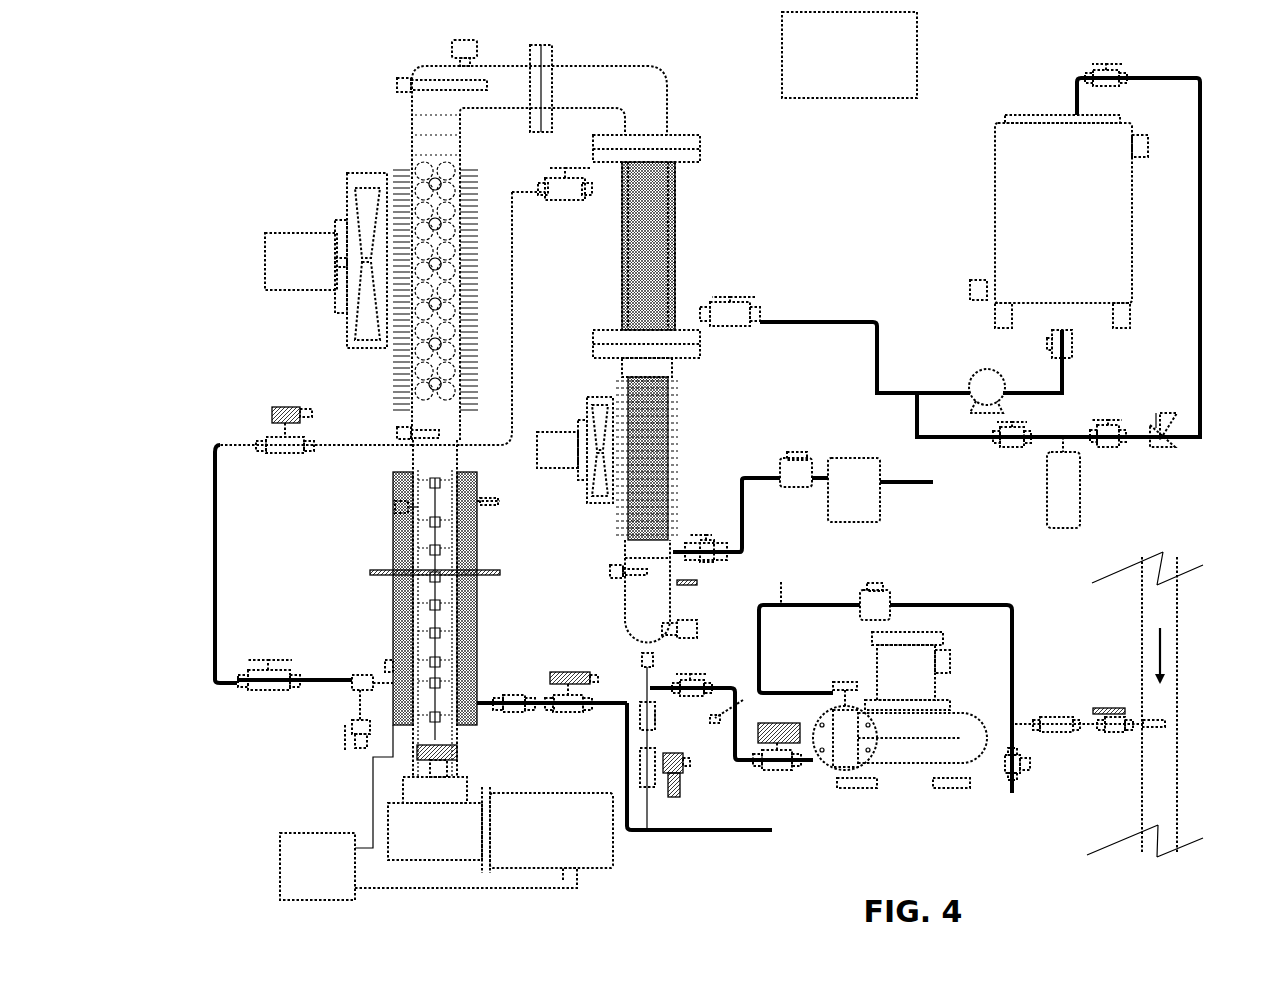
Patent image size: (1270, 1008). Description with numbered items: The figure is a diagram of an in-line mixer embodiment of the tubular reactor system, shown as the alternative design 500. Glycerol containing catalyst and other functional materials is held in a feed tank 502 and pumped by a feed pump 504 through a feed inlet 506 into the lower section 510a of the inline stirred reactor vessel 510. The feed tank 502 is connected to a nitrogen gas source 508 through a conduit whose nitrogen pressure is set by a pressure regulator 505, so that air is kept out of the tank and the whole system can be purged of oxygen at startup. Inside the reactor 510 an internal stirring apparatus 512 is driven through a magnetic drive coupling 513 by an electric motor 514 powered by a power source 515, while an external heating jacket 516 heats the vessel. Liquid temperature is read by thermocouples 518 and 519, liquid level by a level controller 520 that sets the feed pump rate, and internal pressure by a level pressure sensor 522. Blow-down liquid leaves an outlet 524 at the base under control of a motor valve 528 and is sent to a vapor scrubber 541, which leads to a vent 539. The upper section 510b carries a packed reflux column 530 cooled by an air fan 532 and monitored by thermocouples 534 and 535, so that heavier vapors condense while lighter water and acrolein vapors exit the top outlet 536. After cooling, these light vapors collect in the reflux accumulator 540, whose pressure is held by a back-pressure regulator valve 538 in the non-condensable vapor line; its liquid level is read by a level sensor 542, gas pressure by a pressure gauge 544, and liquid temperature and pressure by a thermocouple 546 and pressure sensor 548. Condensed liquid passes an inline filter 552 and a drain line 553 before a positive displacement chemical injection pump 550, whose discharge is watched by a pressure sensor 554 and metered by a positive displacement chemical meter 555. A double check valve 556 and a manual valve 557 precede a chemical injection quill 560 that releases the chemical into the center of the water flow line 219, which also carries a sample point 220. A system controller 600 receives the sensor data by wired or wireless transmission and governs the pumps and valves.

The design 500 is at (222, 128).
The inline stirred reactor vessel 510 is at (290, 341).
The lower section 510a is at (458, 538).
The upper section 510b is at (458, 400).
The internal stirring apparatus 512 is at (445, 604).
The magnetic drive coupling 513 is at (466, 756).
The electric motor 514 is at (547, 830).
The power source 515 is at (428, 812).
The external heating jacket 516 is at (395, 551).
The thermocouple 518 is at (392, 505).
The thermocouple 519 is at (387, 663).
The level controller 520 is at (400, 459).
The level pressure sensor 522 is at (493, 500).
The outlet 524 is at (500, 690).
The motor valve 528 is at (562, 672).
The reflux column 530 is at (440, 211).
The air fan 532 is at (278, 232).
The thermocouple 534 is at (402, 73).
The thermocouple 535 is at (392, 432).
The top outlet 536 is at (405, 141).
The back-pressure regulator valve 538 is at (801, 452).
The vent 539 is at (905, 488).
The reflux accumulator 540 is at (647, 685).
The vapor scrubber 541 is at (753, 649).
The level sensor 542 is at (612, 560).
The pressure gauge 544 is at (446, 43).
The thermocouple 546 is at (696, 631).
The pressure sensor 548 is at (688, 586).
The chemical injection pump 550 is at (900, 710).
The inline filter 552 is at (742, 706).
The drain line 553 is at (657, 741).
The pressure sensor 554 is at (781, 582).
The positive displacement chemical meter 555 is at (893, 593).
The double check valve 556 is at (1065, 735).
The manual valve 557 is at (1115, 708).
The chemical injection quill 560 is at (1165, 722).
The feed tank 502 is at (1058, 250).
The feed pump 504 is at (976, 373).
The pressure regulator 505 is at (1172, 450).
The feed inlet 506 is at (350, 693).
The nitrogen gas source 508 is at (1044, 486).
The system controller 600 is at (849, 55).
The water flow line 219 is at (1145, 704).
The sample point 220 is at (1010, 781).